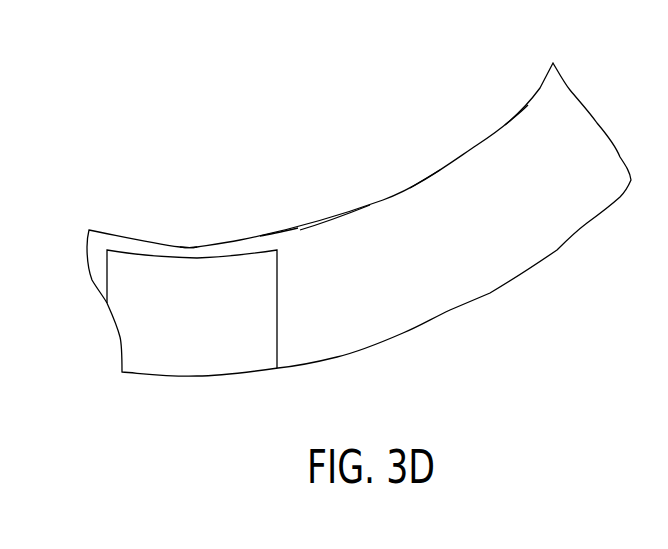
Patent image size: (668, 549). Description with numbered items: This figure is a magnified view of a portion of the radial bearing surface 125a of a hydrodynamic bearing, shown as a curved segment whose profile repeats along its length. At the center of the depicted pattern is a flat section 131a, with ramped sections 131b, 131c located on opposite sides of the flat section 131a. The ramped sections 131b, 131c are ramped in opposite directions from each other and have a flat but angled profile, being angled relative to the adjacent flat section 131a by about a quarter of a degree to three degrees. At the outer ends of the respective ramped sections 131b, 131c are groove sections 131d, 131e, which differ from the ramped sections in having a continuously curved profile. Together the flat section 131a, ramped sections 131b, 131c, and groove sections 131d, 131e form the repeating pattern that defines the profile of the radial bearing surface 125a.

The radial bearing surface 125a is at (478, 145).
The flat section 131a is at (355, 208).
The ramped section 131b is at (298, 227).
The ramped section 131c is at (432, 173).
The groove section 131d is at (195, 247).
The groove section 131e is at (518, 115).